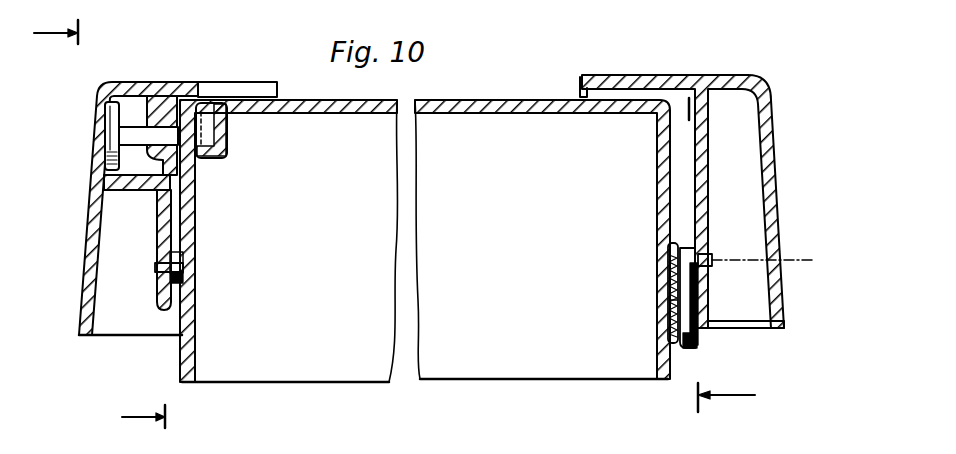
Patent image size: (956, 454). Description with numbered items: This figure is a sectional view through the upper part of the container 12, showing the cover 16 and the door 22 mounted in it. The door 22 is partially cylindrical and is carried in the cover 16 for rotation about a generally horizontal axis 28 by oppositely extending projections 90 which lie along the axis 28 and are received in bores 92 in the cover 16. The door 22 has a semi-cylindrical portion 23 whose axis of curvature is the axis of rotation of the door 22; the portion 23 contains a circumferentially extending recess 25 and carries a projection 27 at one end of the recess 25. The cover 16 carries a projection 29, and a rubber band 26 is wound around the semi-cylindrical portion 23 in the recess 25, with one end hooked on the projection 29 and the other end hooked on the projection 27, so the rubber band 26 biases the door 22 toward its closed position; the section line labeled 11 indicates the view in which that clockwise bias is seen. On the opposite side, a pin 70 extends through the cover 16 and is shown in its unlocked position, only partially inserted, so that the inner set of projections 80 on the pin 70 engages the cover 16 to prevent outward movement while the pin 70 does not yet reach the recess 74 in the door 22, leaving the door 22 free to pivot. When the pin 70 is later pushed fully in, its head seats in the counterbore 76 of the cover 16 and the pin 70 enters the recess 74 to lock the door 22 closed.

The section line 11- 11 is at (99, 218).
The container 12 is at (692, 105).
The cover 16 is at (774, 171).
The door 22 is at (252, 342).
The semi-cylindrical portion 23 is at (688, 348).
The recess 25 is at (668, 284).
The rubber band 26 is at (668, 308).
The projection 27 is at (669, 244).
The axis 28 is at (808, 258).
The projection 29 is at (698, 329).
The pin 70 is at (105, 135).
The recess 74 is at (206, 142).
The counterbore 76 is at (98, 178).
The projections 80 is at (150, 112).
The projections 90 is at (155, 280).
The bores 92 is at (157, 265).